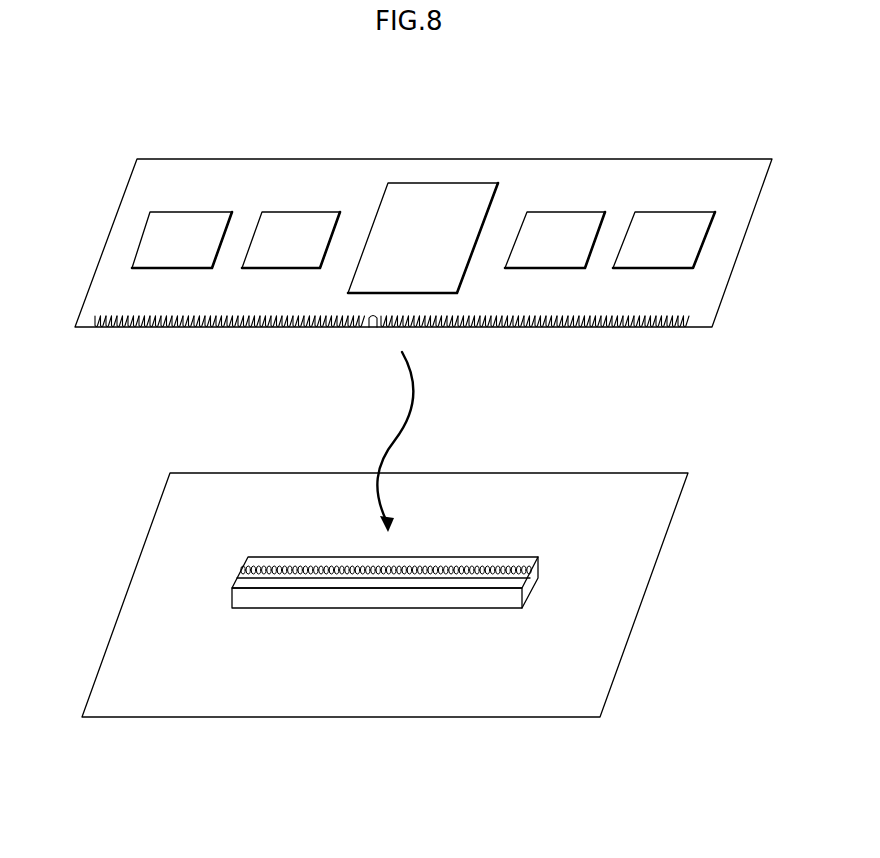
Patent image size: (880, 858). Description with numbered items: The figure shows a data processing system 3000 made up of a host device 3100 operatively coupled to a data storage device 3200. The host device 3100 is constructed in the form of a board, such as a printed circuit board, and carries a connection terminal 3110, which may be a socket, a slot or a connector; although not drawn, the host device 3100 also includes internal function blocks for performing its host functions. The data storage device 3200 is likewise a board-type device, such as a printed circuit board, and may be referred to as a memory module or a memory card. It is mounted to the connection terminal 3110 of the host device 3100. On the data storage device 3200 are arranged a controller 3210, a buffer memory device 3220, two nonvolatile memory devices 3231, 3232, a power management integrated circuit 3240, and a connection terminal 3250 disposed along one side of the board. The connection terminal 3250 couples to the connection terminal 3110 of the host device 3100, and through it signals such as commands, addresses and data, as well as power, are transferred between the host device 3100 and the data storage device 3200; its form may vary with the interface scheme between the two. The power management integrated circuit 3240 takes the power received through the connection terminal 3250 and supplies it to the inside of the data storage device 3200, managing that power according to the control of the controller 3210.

The data processing system 3000 is at (112, 121).
The data storage device 3200 is at (423, 243).
The power management integrated circuit 3240 is at (182, 240).
The buffer memory device 3220 is at (291, 240).
The controller 3210 is at (423, 238).
The nonvolatile memory device 3231 is at (555, 240).
The nonvolatile memory device 3232 is at (664, 240).
The connection terminal 3250 is at (121, 327).
The host device 3100 is at (385, 595).
The connection terminal 3110 is at (539, 561).